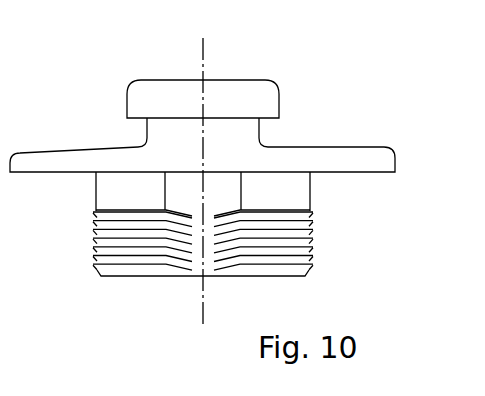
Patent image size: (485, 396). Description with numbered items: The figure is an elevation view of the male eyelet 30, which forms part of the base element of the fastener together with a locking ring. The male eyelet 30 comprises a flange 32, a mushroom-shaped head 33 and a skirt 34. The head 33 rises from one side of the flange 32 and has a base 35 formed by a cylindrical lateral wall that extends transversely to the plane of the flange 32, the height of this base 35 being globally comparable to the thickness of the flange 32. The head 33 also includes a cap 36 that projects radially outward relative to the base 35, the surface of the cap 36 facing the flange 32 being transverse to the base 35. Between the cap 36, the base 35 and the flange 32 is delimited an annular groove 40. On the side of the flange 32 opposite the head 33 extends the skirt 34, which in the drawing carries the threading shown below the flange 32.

The male eyelet 30 is at (287, 54).
The flange 32 is at (35, 152).
The mushroom-shaped head 33 is at (128, 99).
The skirt 34 is at (300, 189).
The base 35 is at (170, 128).
The cap 36 is at (223, 84).
The annular groove 40 is at (270, 131).